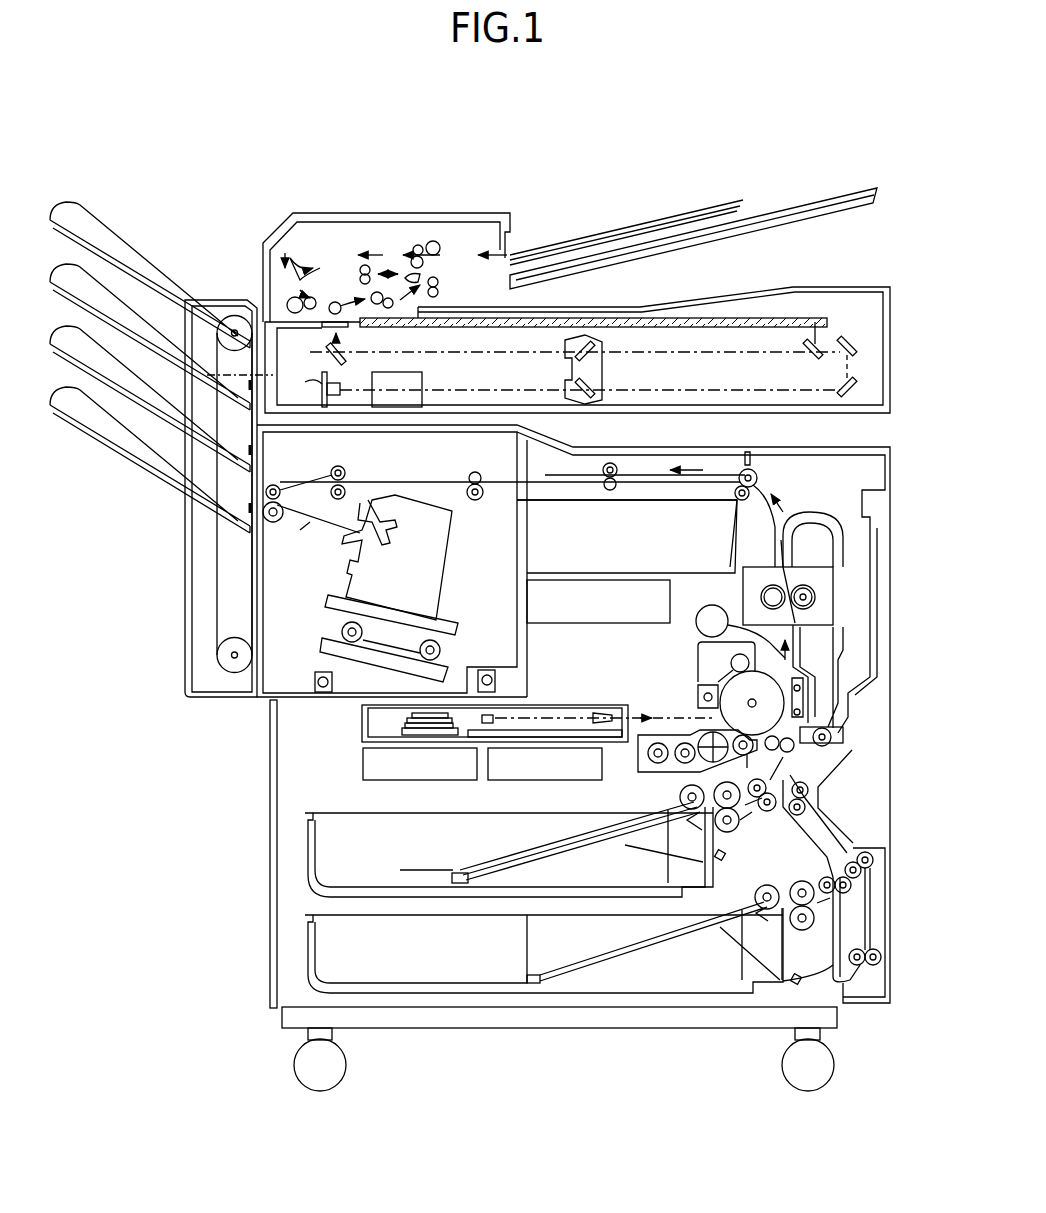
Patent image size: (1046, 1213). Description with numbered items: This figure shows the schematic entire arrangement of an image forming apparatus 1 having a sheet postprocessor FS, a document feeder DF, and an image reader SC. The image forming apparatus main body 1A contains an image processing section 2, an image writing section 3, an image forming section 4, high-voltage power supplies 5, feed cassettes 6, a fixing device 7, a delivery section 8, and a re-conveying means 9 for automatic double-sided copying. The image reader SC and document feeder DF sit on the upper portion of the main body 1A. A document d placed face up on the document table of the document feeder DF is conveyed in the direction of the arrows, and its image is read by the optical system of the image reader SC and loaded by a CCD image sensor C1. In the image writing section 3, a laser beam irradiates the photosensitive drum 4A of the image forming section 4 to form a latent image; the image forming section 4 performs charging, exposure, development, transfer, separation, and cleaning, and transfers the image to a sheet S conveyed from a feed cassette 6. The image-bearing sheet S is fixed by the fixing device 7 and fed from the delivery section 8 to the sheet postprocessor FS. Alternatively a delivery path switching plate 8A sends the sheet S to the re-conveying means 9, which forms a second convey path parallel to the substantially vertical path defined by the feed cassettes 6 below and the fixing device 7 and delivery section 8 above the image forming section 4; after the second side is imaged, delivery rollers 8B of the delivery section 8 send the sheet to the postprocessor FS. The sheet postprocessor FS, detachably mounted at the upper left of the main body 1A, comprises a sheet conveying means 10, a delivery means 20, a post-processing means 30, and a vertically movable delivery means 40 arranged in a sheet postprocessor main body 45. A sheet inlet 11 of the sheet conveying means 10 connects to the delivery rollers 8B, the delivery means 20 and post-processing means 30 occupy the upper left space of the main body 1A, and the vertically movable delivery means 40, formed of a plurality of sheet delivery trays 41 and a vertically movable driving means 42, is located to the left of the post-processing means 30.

The image forming apparatus 1 is at (238, 778).
The image forming apparatus main body 1A is at (268, 843).
The image processing section 2 is at (573, 610).
The image writing section 3 is at (362, 724).
The image forming section 4 is at (687, 681).
The photosensitive drum 4A is at (697, 700).
The high-voltage power supplies 5 is at (440, 775).
The feed cassettes 6 is at (315, 877).
The fixing device 7 is at (743, 592).
The delivery section 8 is at (758, 463).
The delivery path switching plate 8A is at (788, 548).
The delivery rollers 8B is at (760, 472).
The re-conveying means (ADU) 9 is at (850, 722).
The sheet conveying means 10 is at (639, 462).
The sheet inlet 11 is at (735, 497).
The delivery means 20 is at (277, 478).
The post-processing means 30 is at (457, 612).
The vertically movable delivery means 40 is at (127, 478).
The sheet delivery trays (bins) 41 is at (86, 436).
The vertically movable driving means 42 is at (217, 596).
The sheet postprocessor main body 45 is at (185, 667).
The sheet postprocessor FS is at (178, 243).
The document feeder DF is at (784, 207).
The document d is at (624, 226).
The image reader (scanner) SC is at (731, 345).
The CCD image sensor C1 is at (313, 356).
The sheet S is at (562, 849).